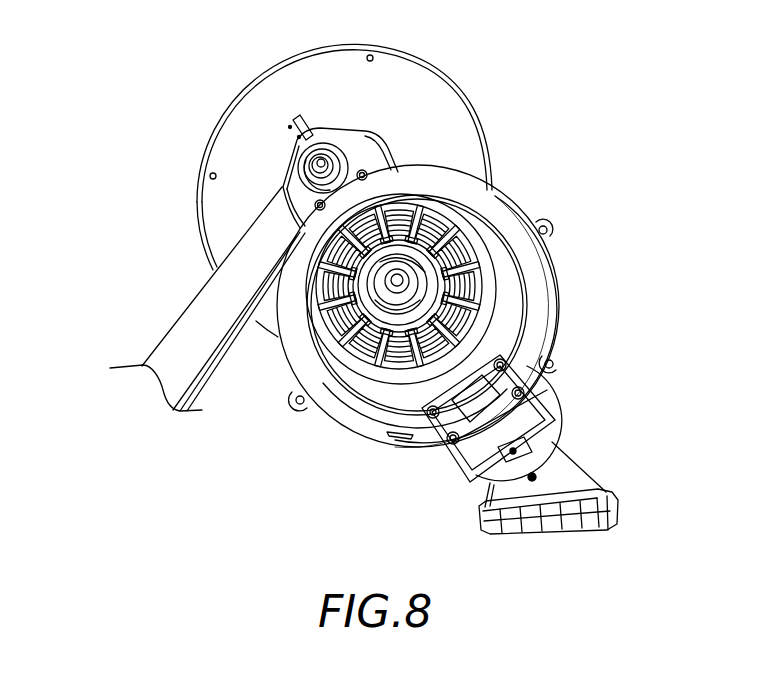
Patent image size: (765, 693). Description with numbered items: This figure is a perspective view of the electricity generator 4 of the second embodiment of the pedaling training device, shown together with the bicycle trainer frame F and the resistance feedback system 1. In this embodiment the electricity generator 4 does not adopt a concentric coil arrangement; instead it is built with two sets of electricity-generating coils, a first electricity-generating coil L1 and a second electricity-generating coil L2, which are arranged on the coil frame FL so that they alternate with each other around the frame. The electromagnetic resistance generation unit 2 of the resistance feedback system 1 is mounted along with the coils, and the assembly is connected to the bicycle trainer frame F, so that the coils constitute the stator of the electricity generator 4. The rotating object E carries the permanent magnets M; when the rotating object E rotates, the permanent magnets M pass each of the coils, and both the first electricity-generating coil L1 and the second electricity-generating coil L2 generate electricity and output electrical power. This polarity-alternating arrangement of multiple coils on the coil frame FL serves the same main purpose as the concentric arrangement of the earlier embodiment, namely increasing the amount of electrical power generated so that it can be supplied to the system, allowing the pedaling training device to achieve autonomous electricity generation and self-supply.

The resistance feedback system 1 is at (562, 245).
The electromagnetic resistance generation unit 2 is at (562, 430).
The electricity generator 4 is at (548, 287).
The rotating object E is at (296, 337).
The bicycle trainer frame F is at (176, 307).
The permanent magnets M is at (361, 369).
The coil frame FL is at (480, 291).
The first electricity-generating coil L1 is at (433, 208).
The second electricity-generating coil L2 is at (457, 207).